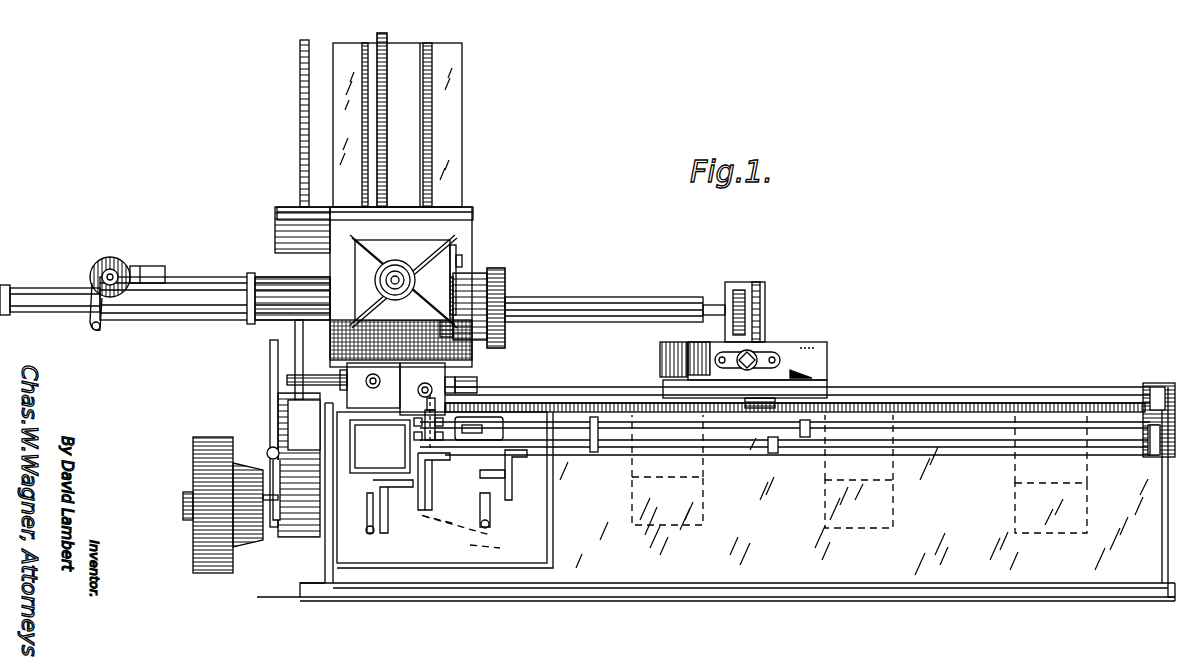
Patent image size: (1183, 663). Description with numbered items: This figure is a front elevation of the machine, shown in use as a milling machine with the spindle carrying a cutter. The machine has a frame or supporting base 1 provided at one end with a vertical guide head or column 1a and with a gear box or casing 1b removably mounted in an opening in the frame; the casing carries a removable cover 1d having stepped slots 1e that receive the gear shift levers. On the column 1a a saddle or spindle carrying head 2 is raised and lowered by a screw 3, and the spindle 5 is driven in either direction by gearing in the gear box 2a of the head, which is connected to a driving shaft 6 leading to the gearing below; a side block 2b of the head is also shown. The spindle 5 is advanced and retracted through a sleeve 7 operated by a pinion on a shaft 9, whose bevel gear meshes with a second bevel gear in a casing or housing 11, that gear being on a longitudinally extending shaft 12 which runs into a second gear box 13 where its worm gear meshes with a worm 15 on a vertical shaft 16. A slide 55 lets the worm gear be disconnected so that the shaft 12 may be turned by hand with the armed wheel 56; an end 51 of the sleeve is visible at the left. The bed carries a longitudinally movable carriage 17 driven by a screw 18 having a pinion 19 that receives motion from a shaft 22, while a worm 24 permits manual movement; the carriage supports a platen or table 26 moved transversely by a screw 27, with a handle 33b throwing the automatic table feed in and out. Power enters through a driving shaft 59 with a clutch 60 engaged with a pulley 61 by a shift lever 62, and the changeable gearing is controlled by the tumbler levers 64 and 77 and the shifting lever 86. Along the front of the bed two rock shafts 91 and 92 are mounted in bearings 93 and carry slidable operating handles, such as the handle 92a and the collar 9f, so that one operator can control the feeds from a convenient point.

The frame or supporting base 1 is at (752, 575).
The vertical guide head or column 1a is at (456, 108).
The gear box or casing 1b is at (326, 553).
The removable cover 1d is at (545, 533).
The stepped slots 1e is at (418, 500).
The saddle or spindle carrying head 2 is at (427, 287).
The gear box 2a is at (465, 222).
The housing side block 2b is at (275, 227).
The screw 3 is at (380, 38).
The spindle 5 is at (555, 297).
The driving shaft 6 is at (300, 172).
The sleeve 7 is at (62, 295).
The shaft 9 is at (118, 268).
The collar 9f is at (805, 437).
The casing or housing 11 is at (105, 265).
The longitudinally extending shaft 12 is at (222, 278).
The second gear box 13 is at (462, 245).
The worm 15 is at (397, 389).
The vertical shaft 16 is at (442, 153).
The carriage 17 is at (828, 385).
The screw 18 is at (606, 400).
The pinion 19 is at (1159, 412).
The shaft 22 is at (1070, 392).
The worm 24 is at (280, 405).
The platen or table 26 is at (827, 360).
The screw 27 is at (789, 381).
The handle 33b is at (662, 365).
The shaft end 51 is at (9, 292).
The slide 55 is at (462, 261).
The armed wheel 56 is at (415, 275).
The driving shaft 59 is at (282, 525).
The clutch 60 is at (265, 455).
The pulley 61 is at (213, 437).
The shift lever 62 is at (270, 382).
The gear shift tumbler lever 64 is at (375, 533).
The second change gear tumbler lever 77 is at (492, 520).
The shifting lever 86 is at (487, 423).
The rock shaft 91 is at (978, 447).
The rock shaft 92 is at (1012, 447).
The operating handle 92a is at (775, 452).
The bearings 93 is at (598, 447).